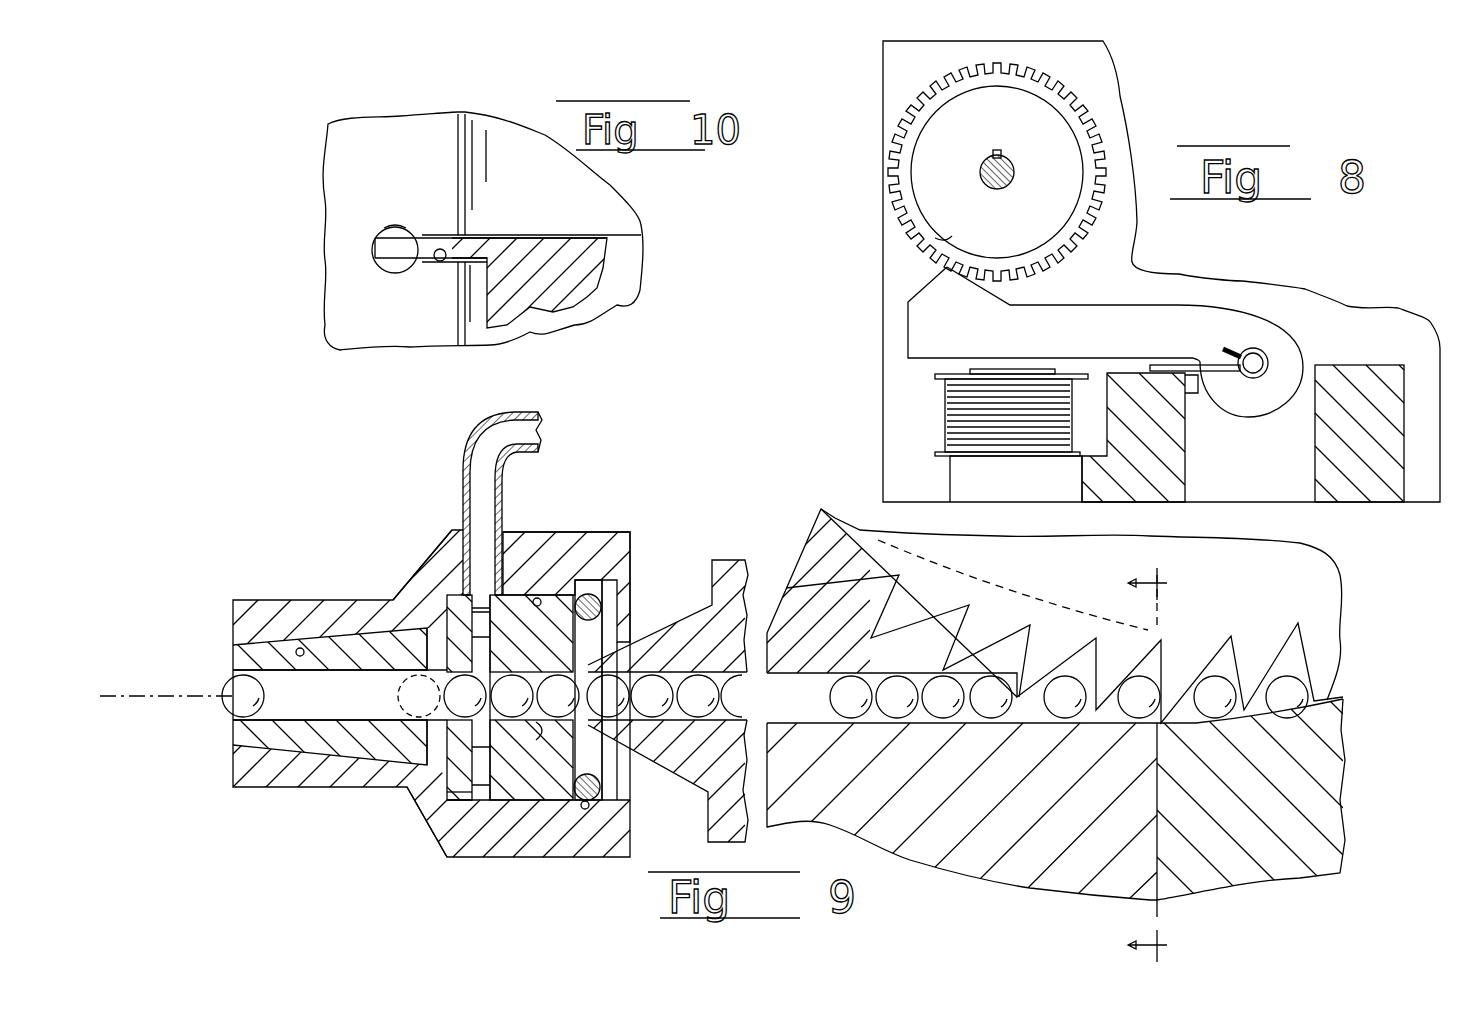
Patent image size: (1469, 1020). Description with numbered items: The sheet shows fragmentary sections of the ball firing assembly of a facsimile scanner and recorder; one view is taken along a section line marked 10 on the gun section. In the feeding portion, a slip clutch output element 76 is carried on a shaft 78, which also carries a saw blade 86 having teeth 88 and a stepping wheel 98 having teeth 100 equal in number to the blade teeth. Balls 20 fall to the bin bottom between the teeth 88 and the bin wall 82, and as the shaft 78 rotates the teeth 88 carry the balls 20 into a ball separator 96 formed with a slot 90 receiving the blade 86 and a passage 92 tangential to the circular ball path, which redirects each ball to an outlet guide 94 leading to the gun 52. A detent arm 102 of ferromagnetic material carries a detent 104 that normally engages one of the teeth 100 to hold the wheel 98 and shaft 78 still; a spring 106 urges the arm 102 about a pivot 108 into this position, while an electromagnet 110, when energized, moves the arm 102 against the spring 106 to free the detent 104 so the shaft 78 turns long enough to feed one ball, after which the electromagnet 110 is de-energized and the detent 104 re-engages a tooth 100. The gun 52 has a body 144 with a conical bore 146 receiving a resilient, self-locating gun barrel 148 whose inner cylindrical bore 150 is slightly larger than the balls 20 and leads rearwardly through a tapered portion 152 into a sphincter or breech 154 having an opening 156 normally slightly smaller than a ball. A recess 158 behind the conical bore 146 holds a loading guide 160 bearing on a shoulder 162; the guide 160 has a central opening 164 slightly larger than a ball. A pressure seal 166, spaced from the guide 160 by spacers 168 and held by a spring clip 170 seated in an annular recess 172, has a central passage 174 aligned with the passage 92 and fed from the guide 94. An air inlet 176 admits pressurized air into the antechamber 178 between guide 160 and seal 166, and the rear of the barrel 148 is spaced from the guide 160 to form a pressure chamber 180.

In FIG. 9, the section line of FIG. 10 is at (1022, 751).
In FIG. 9, the balls 20 is at (656, 676).
In FIG. 9, the gun 52 is at (462, 863).
In FIG. 8, the output element 76 is at (1069, 152).
In FIG. 8, the shaft 78 is at (1012, 180).
In FIG. 9, the wall 82 is at (1345, 777).
In FIG. 10, the saw blade 86 is at (527, 318).
In FIG. 9, the saw blade 86 is at (1314, 586).
In FIG. 10, the teeth 88 is at (372, 258).
In FIG. 9, the teeth 88 is at (1322, 665).
In FIG. 10, the slot 90 is at (440, 263).
In FIG. 9, the slot 90 is at (808, 557).
In FIG. 10, the passage 92 is at (395, 228).
In FIG. 9, the passage 92 is at (817, 695).
In FIG. 9, the outlet guide 94 is at (679, 627).
In FIG. 10, the ball separator 96 is at (338, 140).
In FIG. 9, the ball separator 96 is at (998, 843).
In FIG. 8, the stepping wheel 98 is at (939, 239).
In FIG. 8, the teeth 100 is at (930, 80).
In FIG. 8, the detent arm 102 is at (1221, 300).
In FIG. 8, the detent 104 is at (943, 270).
In FIG. 8, the spring 106 is at (1252, 380).
In FIG. 8, the pivot 108 is at (1266, 356).
In FIG. 8, the electromagnet 110 is at (939, 414).
In FIG. 9, the body 144 is at (430, 578).
In FIG. 9, the conical bore 146 is at (300, 647).
In FIG. 9, the gun barrel 148 is at (248, 742).
In FIG. 9, the inner cylindrical bore 150 is at (257, 653).
In FIG. 9, the tapered portion 152 is at (410, 720).
In FIG. 9, the sphincter 154 is at (433, 630).
In FIG. 9, the opening 156 is at (400, 683).
In FIG. 9, the recess 158 is at (541, 598).
In FIG. 9, the loading guide 160 is at (453, 590).
In FIG. 9, the shoulder 162 is at (455, 798).
In FIG. 9, the central opening 164 is at (531, 697).
In FIG. 9, the pressure seal 166 is at (512, 800).
In FIG. 9, the spacers 168 is at (470, 793).
In FIG. 9, the spring clip 170 is at (606, 788).
In FIG. 9, the annular recess 172 is at (583, 808).
In FIG. 9, the central passage 174 is at (541, 720).
In FIG. 9, the air inlet 176 is at (478, 432).
In FIG. 9, the antechamber 178 is at (440, 838).
In FIG. 9, the pressure chamber 180 is at (433, 747).